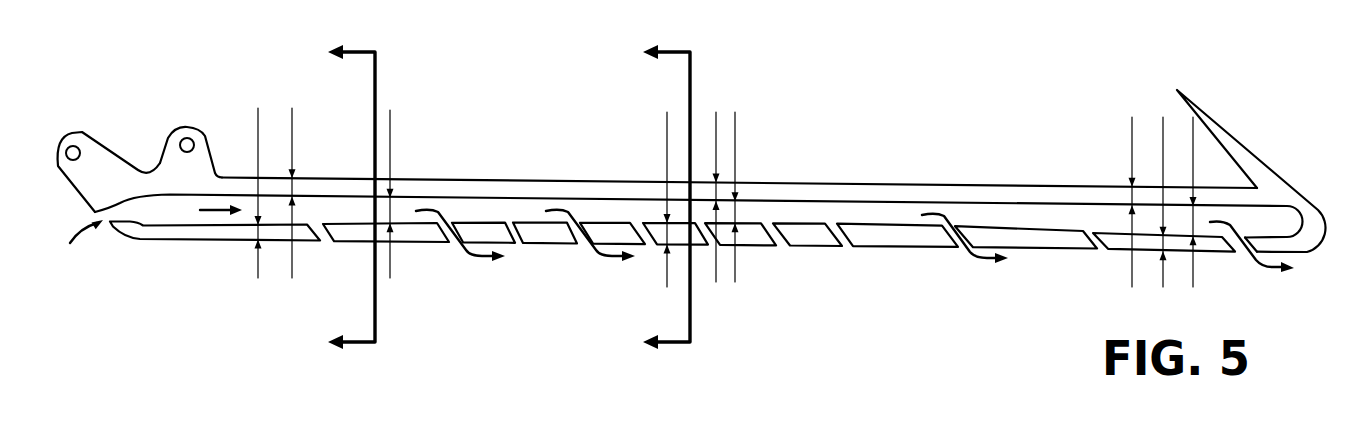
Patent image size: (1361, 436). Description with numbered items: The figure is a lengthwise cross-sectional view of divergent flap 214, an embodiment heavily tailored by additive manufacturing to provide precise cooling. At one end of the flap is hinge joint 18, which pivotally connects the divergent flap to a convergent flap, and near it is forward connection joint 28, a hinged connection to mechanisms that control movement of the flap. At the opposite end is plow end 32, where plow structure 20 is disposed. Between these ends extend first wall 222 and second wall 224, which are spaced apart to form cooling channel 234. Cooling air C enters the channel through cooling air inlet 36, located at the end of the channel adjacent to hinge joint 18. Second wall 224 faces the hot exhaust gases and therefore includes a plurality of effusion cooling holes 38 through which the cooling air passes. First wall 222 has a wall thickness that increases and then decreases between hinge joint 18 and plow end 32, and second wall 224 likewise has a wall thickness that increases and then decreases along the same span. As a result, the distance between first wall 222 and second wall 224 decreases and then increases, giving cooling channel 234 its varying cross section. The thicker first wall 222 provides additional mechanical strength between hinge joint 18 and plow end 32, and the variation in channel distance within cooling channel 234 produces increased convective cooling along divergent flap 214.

The hinge joint 18 is at (67, 132).
The forward connection joint 28 is at (187, 125).
The cooling air inlet 36 is at (115, 225).
The divergent flap 214 is at (474, 166).
The first wall 222 is at (820, 183).
The second wall 224 is at (662, 280).
The cooling channel 234 is at (1042, 231).
The effusion cooling holes 38 is at (776, 228).
The plow structure 20 is at (1217, 122).
The plow end 32 is at (703, 192).